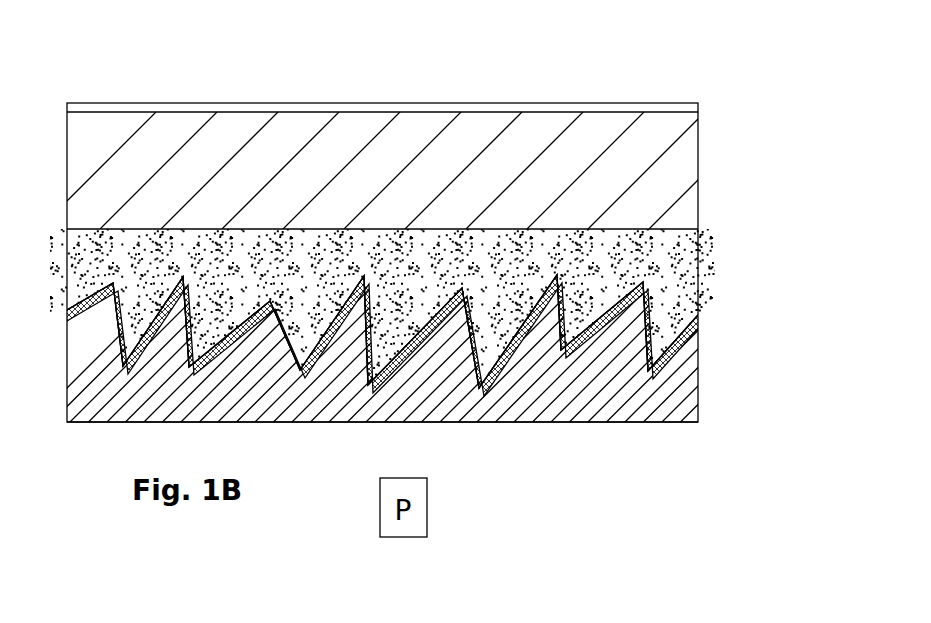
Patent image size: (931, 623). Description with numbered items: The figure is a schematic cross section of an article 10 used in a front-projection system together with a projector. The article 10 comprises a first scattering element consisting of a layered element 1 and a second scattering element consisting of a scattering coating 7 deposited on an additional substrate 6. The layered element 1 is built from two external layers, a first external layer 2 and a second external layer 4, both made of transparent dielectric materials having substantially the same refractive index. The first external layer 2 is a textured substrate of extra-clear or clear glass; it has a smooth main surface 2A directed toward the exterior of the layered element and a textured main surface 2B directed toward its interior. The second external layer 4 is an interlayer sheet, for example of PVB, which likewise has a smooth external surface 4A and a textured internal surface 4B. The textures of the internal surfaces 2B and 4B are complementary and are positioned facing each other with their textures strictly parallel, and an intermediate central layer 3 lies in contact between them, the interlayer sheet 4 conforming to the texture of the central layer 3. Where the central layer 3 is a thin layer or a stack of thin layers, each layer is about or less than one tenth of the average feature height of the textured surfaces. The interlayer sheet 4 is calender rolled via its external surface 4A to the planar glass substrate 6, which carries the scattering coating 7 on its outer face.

The article 10 is at (114, 85).
The scattering coating 7 is at (698, 108).
The additional substrate 6 is at (683, 150).
The smooth main surface of second external layer 4A is at (663, 218).
The second external layer 4 is at (698, 258).
The textured main surface of first external layer 2B is at (670, 292).
The intermediate central layer 3 is at (682, 326).
The textured main surface of second external layer 4B is at (683, 350).
The first external layer 2 is at (677, 393).
The smooth main surface of first external layer 2A is at (646, 435).
The layered element 1 is at (58, 230).